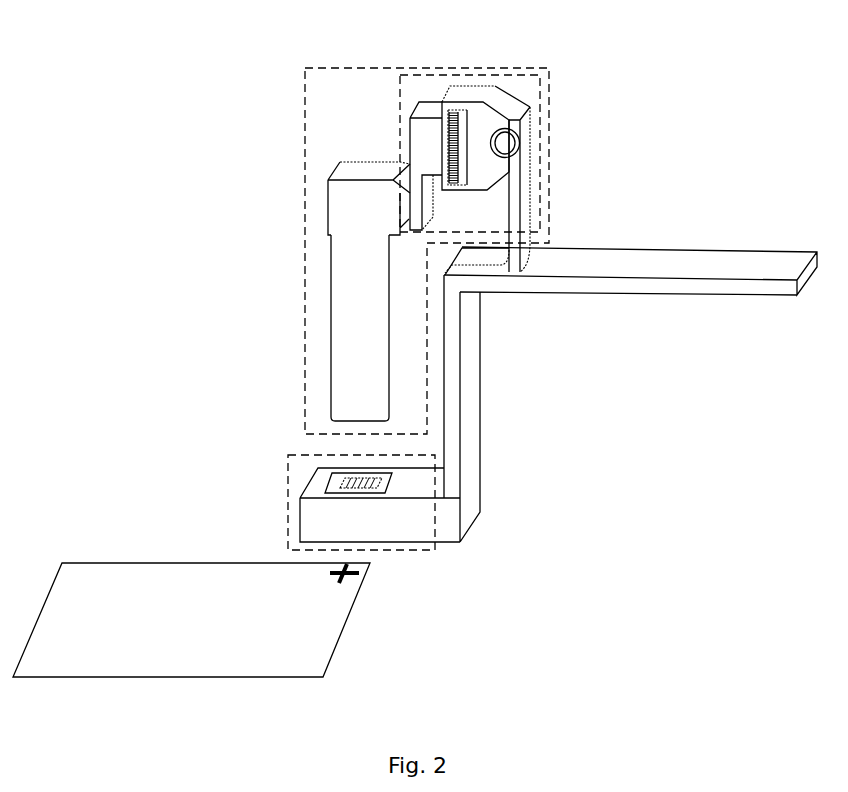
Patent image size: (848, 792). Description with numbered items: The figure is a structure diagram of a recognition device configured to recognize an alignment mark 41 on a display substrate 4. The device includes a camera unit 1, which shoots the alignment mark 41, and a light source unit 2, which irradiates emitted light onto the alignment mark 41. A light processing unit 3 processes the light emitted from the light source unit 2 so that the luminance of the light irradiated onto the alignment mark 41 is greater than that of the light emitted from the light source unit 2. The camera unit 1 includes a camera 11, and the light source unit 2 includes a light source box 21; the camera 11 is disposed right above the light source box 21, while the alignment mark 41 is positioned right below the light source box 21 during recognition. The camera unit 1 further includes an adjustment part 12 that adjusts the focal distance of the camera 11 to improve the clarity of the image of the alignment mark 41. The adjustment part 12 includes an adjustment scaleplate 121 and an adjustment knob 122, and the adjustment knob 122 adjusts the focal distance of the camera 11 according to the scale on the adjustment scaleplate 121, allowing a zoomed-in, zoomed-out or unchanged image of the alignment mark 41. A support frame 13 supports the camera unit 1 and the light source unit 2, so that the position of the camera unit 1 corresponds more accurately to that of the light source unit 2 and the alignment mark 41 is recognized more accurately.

The camera unit 1 is at (303, 72).
The camera 11 is at (355, 337).
The adjustment part 12 is at (399, 74).
The adjustment scaleplate 121 is at (473, 115).
The adjustment knob 122 is at (508, 143).
The support frame 13 is at (722, 267).
The light source unit 2 is at (435, 550).
The light source box 21 is at (322, 516).
The light processing unit 3 is at (342, 485).
The display substrate 4 is at (253, 658).
The alignment mark 41 is at (350, 575).